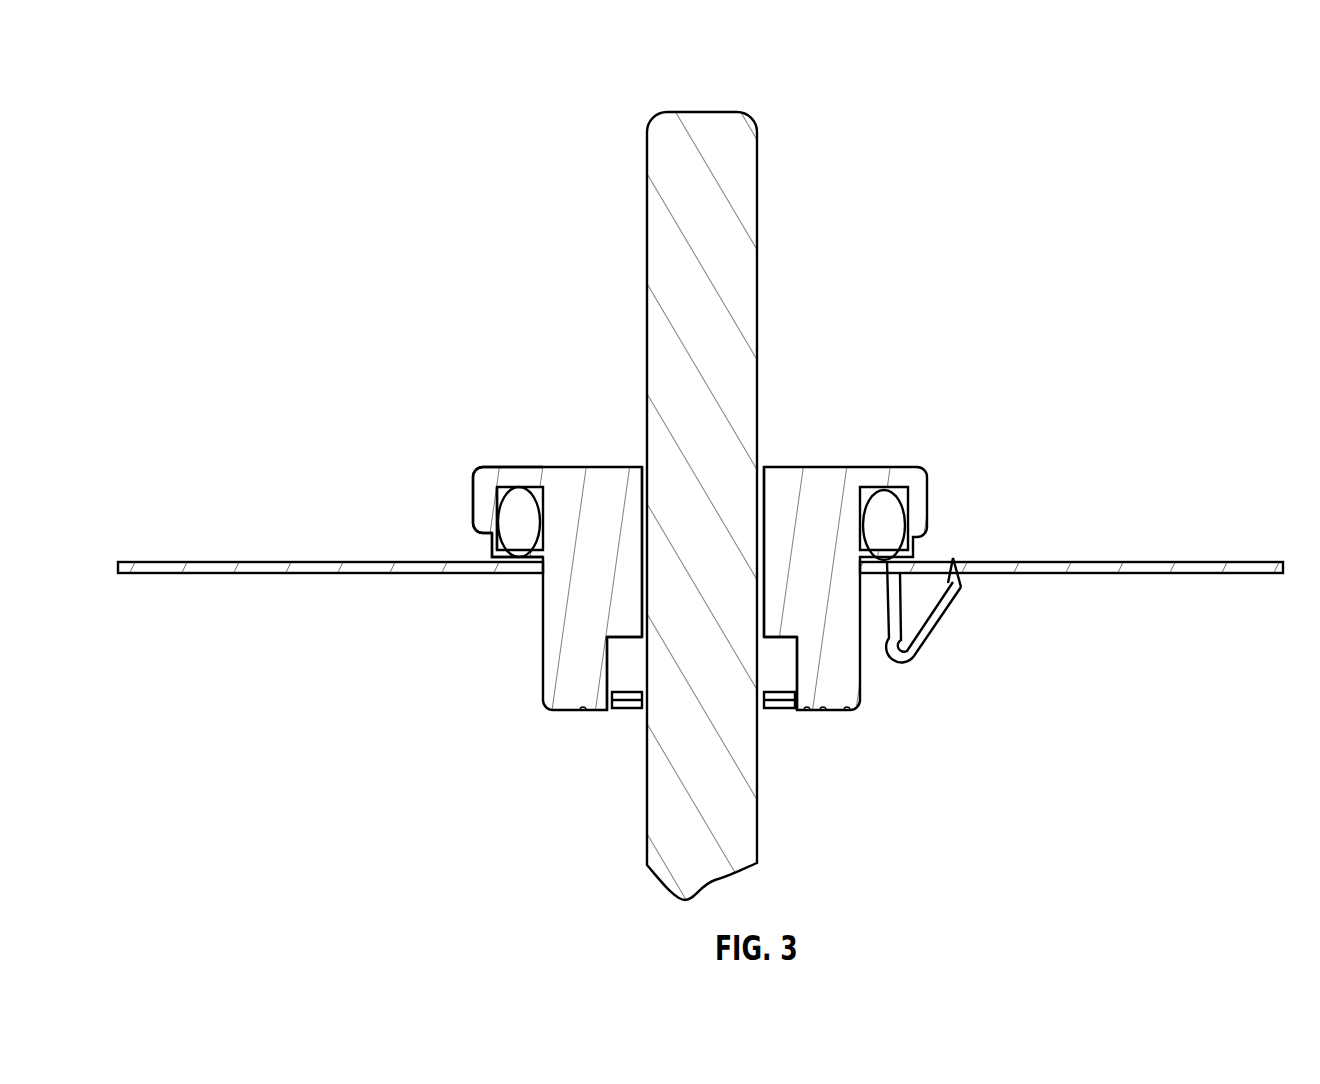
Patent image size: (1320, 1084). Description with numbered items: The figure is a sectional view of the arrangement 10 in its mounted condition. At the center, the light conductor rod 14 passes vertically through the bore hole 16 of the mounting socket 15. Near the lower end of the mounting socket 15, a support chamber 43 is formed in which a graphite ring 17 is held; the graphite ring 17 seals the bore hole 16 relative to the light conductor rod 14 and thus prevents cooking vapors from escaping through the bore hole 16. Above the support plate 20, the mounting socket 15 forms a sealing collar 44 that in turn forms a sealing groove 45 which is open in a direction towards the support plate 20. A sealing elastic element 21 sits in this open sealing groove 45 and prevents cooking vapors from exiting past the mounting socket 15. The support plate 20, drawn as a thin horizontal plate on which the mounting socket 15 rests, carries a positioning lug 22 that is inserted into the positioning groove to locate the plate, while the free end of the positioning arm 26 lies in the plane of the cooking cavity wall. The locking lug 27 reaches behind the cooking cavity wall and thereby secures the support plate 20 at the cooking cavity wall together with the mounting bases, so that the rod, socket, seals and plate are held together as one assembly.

The arrangement 10 is at (1153, 212).
The light conductor rod 14 is at (770, 253).
The mounting socket 15 is at (887, 447).
The bore hole 16 is at (762, 466).
The graphite ring 17 is at (783, 692).
The support plate 20 is at (464, 548).
The sealing elastic element 21 is at (523, 513).
The positioning lug 22 is at (930, 663).
The positioning arm 26 is at (897, 520).
The locking lug 27 is at (958, 605).
The support chamber 43 is at (798, 668).
The sealing collar 44 is at (470, 450).
The sealing groove 45 is at (497, 530).